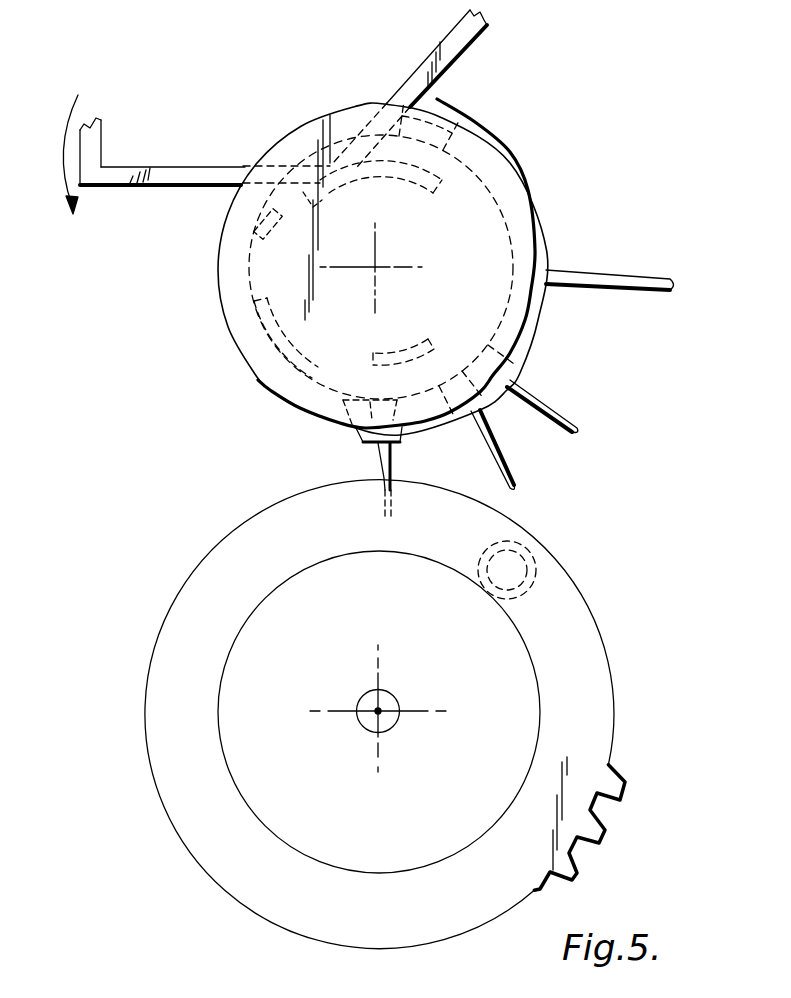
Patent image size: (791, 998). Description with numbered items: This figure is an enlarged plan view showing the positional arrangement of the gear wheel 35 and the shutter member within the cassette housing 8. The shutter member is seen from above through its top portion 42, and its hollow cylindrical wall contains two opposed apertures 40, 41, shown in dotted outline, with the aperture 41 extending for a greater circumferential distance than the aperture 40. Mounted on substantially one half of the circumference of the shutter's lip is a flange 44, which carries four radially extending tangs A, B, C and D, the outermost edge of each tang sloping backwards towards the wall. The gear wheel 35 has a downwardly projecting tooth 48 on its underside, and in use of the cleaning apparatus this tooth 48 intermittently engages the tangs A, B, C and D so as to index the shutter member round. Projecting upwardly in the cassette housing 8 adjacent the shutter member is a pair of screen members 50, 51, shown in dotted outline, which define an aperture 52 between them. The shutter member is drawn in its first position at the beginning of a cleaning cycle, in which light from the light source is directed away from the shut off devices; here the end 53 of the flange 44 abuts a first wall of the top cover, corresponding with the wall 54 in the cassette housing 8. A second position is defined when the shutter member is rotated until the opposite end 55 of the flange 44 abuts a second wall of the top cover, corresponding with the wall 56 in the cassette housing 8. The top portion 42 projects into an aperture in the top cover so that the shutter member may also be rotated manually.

The cassette housing 8 is at (70, 138).
The gear wheel 35 is at (202, 832).
The aperture 40 is at (401, 345).
The aperture 41 is at (412, 190).
The top portion 42 is at (268, 380).
The flange 44 is at (532, 210).
The tooth 48 is at (537, 565).
The screen member 50 is at (262, 318).
The screen member 51 is at (257, 224).
The aperture 52 is at (260, 272).
The end of the flange 53 is at (424, 102).
The wall 54 is at (458, 44).
The end of the flange 55 is at (366, 432).
The wall 56 is at (172, 172).
The tang A is at (393, 466).
The tang B is at (508, 468).
The tang C is at (570, 412).
The tang D is at (610, 307).